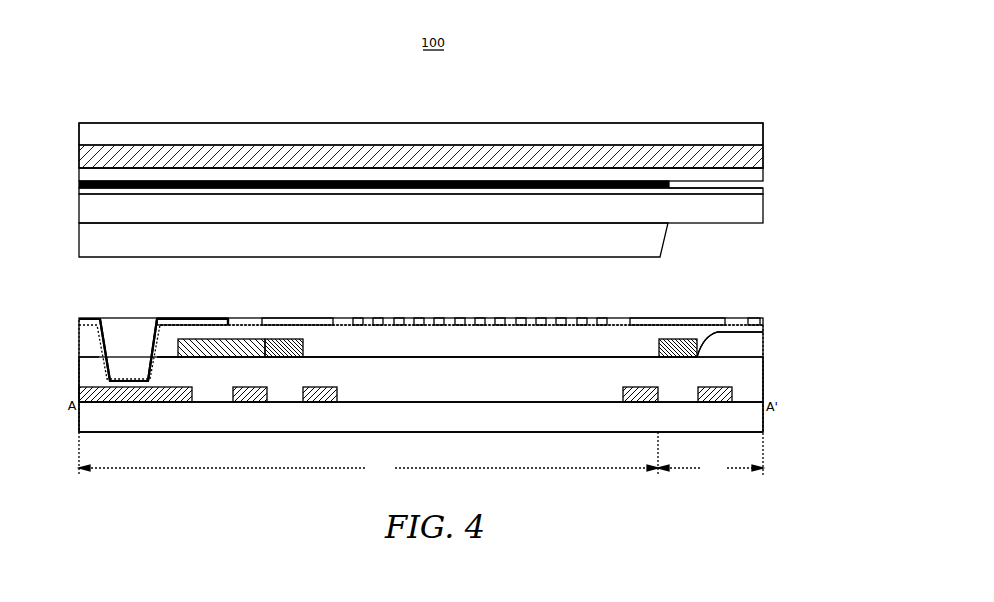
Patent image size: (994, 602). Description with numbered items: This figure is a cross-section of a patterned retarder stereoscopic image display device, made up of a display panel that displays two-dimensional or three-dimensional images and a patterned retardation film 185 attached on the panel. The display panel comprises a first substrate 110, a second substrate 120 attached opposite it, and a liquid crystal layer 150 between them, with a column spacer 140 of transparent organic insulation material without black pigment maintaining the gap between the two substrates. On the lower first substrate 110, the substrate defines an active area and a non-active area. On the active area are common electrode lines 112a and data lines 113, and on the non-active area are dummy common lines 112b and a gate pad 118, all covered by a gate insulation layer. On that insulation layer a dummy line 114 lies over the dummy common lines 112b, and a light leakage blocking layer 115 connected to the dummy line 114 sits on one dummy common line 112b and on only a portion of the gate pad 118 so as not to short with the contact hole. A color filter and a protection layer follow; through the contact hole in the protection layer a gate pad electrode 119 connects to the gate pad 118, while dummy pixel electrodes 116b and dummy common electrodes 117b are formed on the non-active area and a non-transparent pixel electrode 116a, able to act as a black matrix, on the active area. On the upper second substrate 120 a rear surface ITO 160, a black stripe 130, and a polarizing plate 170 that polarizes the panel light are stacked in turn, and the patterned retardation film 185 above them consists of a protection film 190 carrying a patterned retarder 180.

The first substrate 110 is at (79, 320).
The common electrode lines 112a is at (640, 402).
The dummy common lines 112b is at (250, 402).
The data lines 113 is at (675, 339).
The dummy line 114 is at (279, 339).
The light leakage blocking layer 115 is at (247, 339).
The pixel electrode 116a is at (755, 318).
The dummy pixel electrodes 116b is at (443, 318).
The dummy common electrodes 117b is at (463, 318).
The gate pad 118 is at (128, 402).
The gate pad electrode 119 is at (188, 318).
The second substrate 120 is at (752, 208).
The black stripe 130 is at (79, 184).
The column spacer 140 is at (338, 238).
The liquid crystal layer 150 is at (731, 273).
The rear surface ITO 160 is at (79, 192).
The polarizing plate 170 is at (752, 178).
The patterned retarder 180 is at (593, 157).
The patterned retardation film 185 is at (722, 66).
The protection film 190 is at (708, 132).